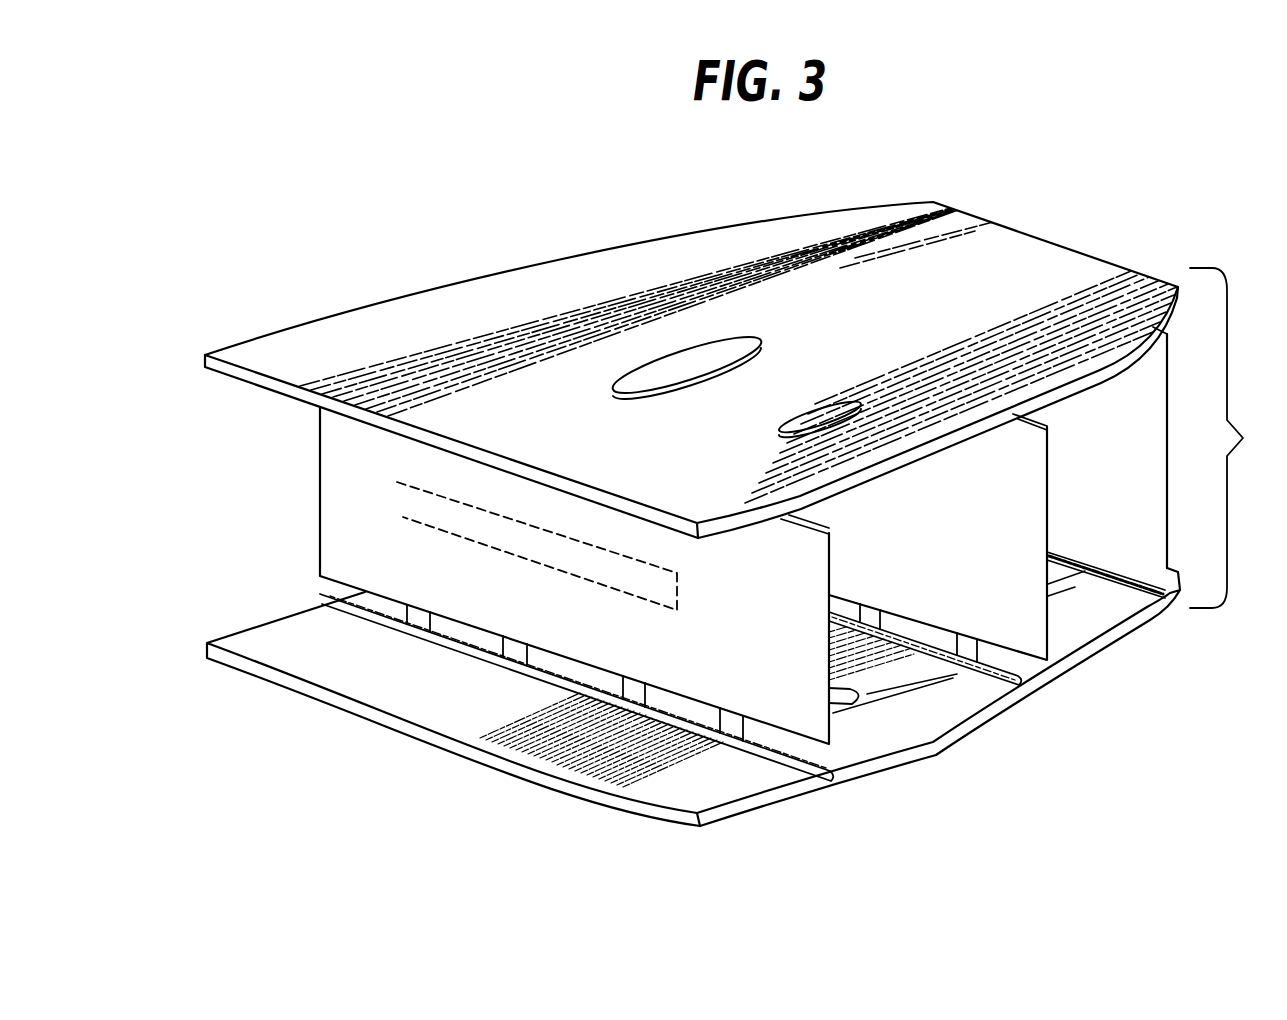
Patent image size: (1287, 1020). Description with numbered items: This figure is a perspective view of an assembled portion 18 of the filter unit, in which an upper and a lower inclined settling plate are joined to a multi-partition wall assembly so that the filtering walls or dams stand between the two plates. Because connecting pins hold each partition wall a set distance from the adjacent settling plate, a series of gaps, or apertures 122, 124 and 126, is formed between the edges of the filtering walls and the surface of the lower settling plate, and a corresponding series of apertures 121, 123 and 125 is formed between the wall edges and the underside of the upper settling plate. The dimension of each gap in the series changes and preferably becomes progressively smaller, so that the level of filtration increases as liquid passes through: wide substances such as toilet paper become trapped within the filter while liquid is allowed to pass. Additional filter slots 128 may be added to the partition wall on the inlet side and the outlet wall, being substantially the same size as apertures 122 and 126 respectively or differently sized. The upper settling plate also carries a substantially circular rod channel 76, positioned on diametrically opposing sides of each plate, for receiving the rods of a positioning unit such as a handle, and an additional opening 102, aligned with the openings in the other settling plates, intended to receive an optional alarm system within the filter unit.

The rod channel 76 is at (700, 362).
The opening 102 is at (837, 410).
The aperture 121 is at (780, 518).
The filter slot 128 is at (420, 503).
The aperture 123 is at (1013, 416).
The aperture 125 is at (1167, 336).
The assembled portion 18 is at (1236, 438).
The aperture 122 is at (327, 587).
The aperture 124 is at (1030, 678).
The aperture 126 is at (1155, 590).